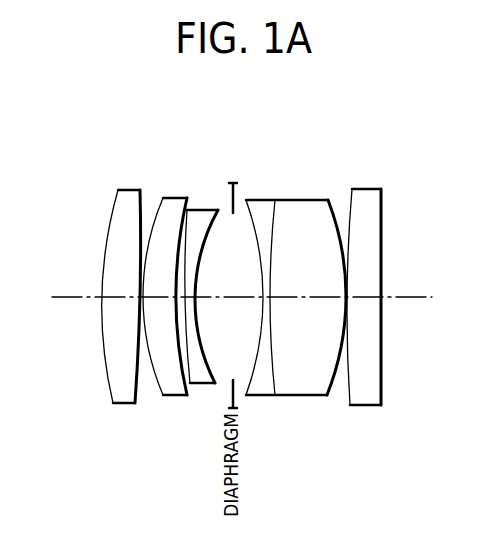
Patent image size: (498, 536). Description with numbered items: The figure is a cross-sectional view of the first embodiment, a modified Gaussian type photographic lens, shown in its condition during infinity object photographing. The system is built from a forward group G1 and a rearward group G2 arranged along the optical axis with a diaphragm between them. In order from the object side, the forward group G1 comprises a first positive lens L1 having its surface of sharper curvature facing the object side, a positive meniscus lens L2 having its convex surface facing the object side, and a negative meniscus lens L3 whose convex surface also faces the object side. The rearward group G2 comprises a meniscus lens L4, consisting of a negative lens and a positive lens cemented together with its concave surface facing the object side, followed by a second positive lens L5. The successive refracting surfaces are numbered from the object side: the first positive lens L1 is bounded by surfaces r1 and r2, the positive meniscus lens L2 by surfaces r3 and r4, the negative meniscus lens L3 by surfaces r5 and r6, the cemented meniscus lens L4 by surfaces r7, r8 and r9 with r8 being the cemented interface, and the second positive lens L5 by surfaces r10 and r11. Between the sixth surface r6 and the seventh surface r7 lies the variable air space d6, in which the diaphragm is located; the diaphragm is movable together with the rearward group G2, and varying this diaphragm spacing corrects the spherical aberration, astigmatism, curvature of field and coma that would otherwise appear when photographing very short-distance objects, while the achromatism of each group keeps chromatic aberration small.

The forward group G1 is at (233, 136).
The rearward group G2 is at (388, 136).
The first positive lens L1 is at (128, 197).
The positive meniscus lens L2 is at (177, 203).
The negative meniscus lens L3 is at (200, 204).
The meniscus lens L4 is at (332, 190).
The second positive lens L5 is at (366, 200).
The variable air space d6 is at (224, 283).
The first lens surface r1 is at (112, 398).
The second lens surface r2 is at (134, 400).
The third lens surface r3 is at (161, 392).
The fourth lens surface r4 is at (185, 393).
The fifth lens surface r5 is at (189, 386).
The sixth lens surface r6 is at (212, 386).
The seventh lens surface r7 is at (246, 398).
The eighth lens surface r8 is at (273, 397).
The ninth lens surface r9 is at (328, 392).
The tenth lens surface r10 is at (352, 405).
The eleventh lens surface r11 is at (380, 407).